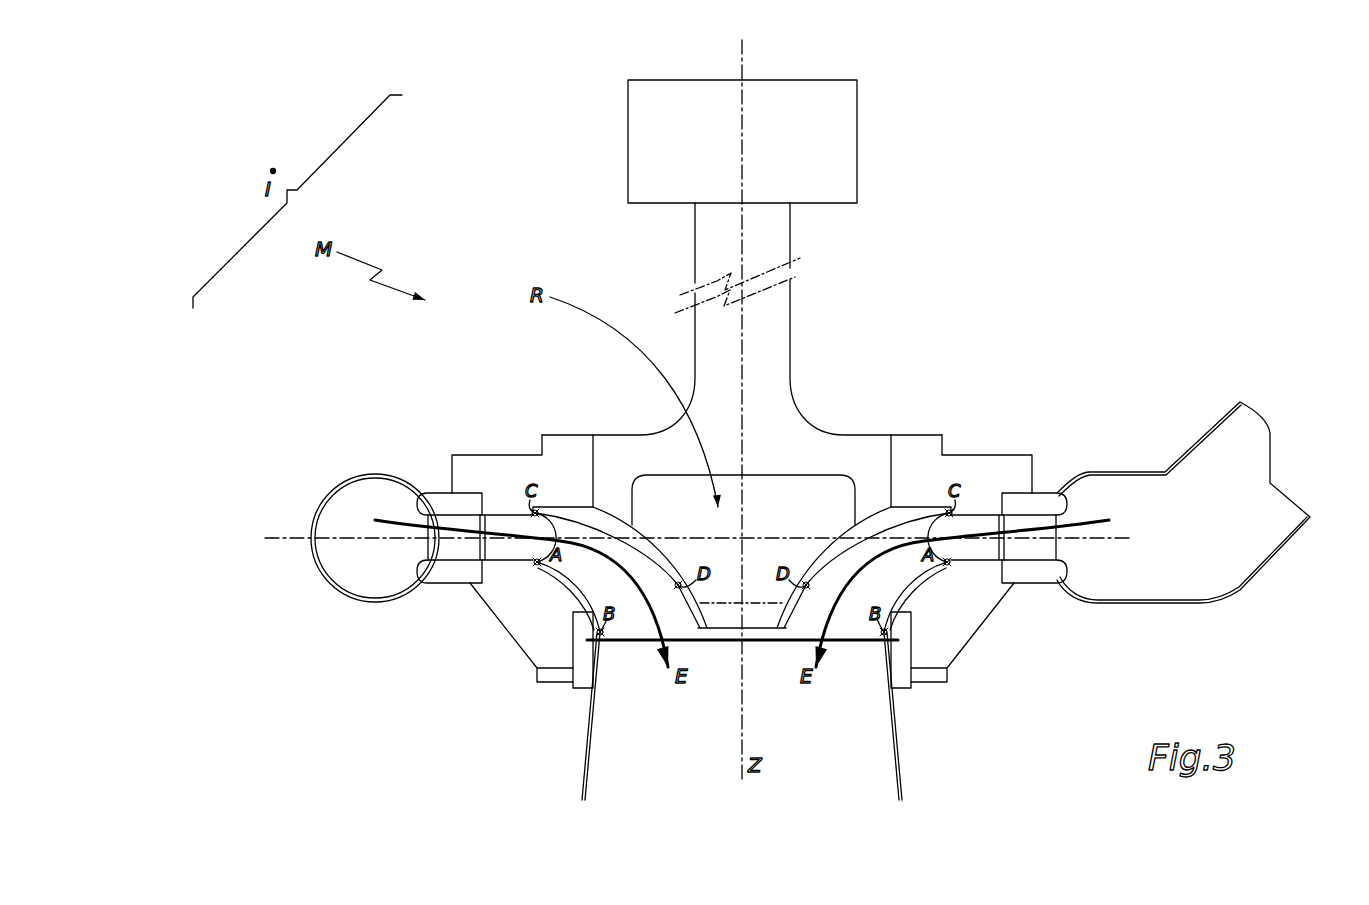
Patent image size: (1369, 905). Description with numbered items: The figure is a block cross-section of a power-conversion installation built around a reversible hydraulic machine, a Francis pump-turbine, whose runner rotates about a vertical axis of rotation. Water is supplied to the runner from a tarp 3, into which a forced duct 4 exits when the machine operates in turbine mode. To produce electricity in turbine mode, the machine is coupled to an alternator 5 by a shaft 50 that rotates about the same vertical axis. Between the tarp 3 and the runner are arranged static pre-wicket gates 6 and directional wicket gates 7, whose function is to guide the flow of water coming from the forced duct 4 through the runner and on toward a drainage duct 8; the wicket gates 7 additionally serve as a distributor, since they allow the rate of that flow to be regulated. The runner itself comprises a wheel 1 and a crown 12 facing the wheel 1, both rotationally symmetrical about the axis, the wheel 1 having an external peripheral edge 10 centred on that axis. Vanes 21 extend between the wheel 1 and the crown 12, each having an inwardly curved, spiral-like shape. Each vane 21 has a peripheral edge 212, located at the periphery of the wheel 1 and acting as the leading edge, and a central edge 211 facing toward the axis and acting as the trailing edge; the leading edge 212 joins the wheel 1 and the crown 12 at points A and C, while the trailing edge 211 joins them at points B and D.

The wheel 1 is at (577, 583).
The tarp 3 is at (365, 567).
The forced duct 4 is at (1245, 558).
The alternator 5 is at (742, 141).
The static pre-wicket gates 6 is at (1037, 572).
The directional wicket gates 7 is at (965, 556).
The drainage duct 8 is at (853, 743).
The external peripheral edge of the wheel 10 is at (537, 562).
The crown 12 is at (816, 557).
The vane 21 is at (638, 612).
The shaft 50 is at (770, 236).
The central edge 211 is at (658, 600).
The peripheral edge 212 is at (545, 532).